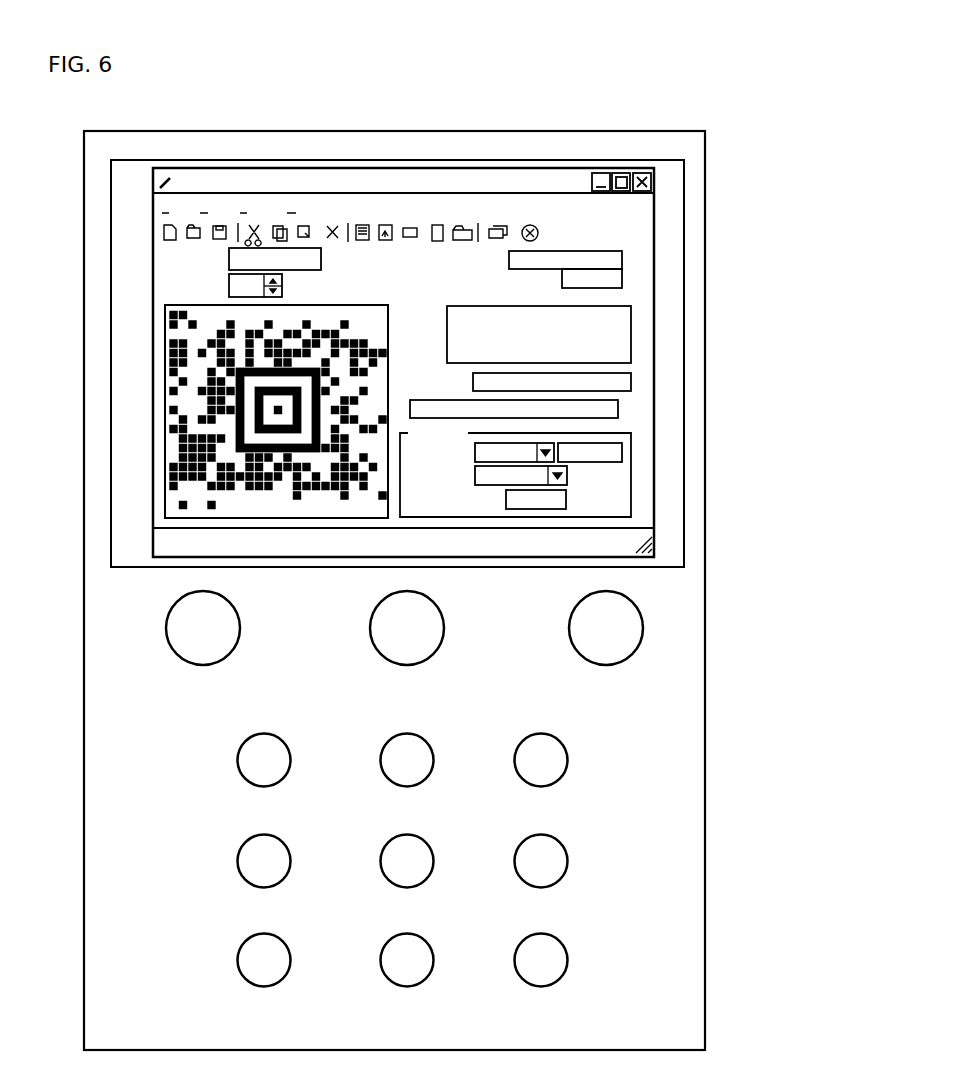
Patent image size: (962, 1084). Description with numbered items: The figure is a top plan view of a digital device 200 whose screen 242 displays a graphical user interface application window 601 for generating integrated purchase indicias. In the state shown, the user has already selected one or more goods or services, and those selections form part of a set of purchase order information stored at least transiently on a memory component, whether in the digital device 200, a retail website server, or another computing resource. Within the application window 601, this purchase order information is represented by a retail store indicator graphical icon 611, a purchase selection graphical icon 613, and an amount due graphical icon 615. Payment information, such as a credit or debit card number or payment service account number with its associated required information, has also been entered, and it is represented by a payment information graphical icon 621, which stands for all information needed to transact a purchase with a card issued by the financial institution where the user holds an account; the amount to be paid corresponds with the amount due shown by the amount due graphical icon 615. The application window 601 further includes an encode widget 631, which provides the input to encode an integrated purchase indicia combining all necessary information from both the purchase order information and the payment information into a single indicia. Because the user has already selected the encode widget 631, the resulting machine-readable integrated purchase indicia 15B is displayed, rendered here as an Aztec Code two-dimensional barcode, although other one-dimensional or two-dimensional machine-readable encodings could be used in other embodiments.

The digital device 200 is at (646, 131).
The screen 242 is at (261, 160).
The graphical user interface application window 601 is at (312, 168).
The machine-readable integrated purchase indicia 15B is at (165, 385).
The retail store indicator graphical icon 611 is at (622, 255).
The payment information graphical icon 621 is at (622, 278).
The purchase selection graphical icon 613 is at (631, 330).
The amount due graphical icon 615 is at (631, 380).
The encode widget 631 is at (618, 409).